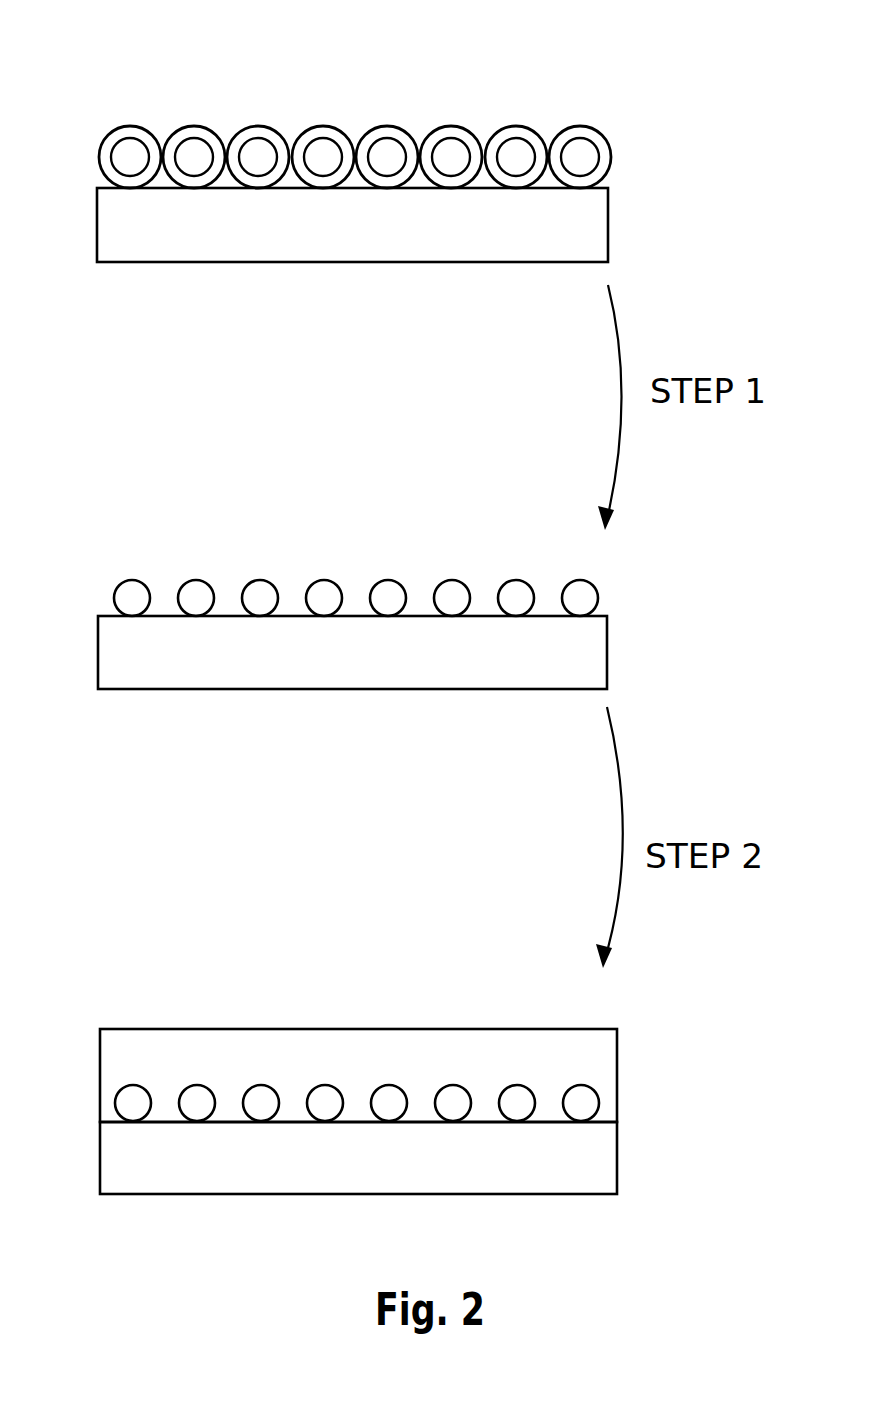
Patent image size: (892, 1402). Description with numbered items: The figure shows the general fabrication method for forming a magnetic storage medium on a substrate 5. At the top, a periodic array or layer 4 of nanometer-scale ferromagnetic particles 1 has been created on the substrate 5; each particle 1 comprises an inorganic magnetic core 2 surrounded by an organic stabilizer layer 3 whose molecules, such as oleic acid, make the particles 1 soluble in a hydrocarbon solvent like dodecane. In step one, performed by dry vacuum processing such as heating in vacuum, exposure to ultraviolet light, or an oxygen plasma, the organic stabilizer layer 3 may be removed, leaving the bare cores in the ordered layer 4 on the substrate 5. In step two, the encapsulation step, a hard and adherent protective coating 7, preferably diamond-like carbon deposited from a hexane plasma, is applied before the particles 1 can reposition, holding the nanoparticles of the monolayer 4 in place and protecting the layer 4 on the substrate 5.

The magnetic particles 1 is at (322, 572).
The inorganic magnetic core 2 is at (457, 150).
The organic stabilizer layer 3 is at (442, 130).
The layer of magnetic particles 4 is at (382, 572).
The substrate 5 is at (260, 248).
The protective coating 7 is at (327, 1043).